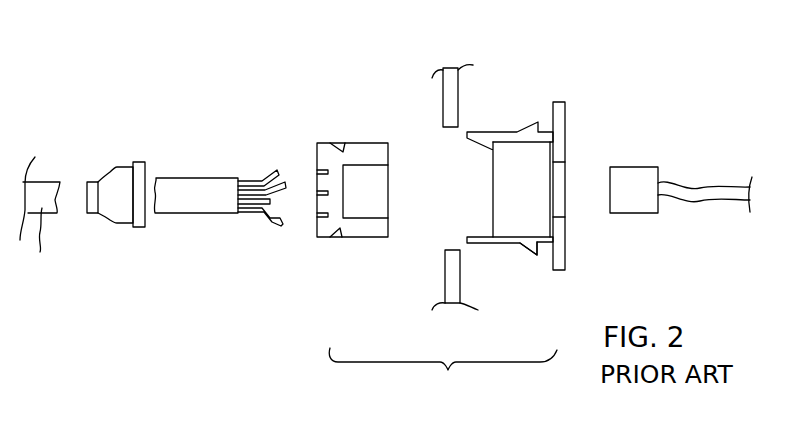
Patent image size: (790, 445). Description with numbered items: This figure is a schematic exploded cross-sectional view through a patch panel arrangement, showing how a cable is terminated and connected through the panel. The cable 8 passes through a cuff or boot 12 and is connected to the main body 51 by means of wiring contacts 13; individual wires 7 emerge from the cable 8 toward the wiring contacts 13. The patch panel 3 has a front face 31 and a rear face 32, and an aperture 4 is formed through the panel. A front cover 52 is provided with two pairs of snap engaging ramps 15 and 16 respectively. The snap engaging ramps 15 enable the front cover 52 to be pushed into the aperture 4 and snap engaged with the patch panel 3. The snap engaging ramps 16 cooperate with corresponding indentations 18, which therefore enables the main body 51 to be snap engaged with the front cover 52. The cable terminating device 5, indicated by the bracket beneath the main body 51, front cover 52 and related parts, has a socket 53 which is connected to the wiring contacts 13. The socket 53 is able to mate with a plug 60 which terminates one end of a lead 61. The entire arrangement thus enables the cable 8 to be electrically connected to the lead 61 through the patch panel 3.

The cable 8 is at (195, 205).
The cuff or boot 12 is at (115, 185).
The wires 7 is at (257, 177).
The wiring contacts 13 is at (317, 215).
The indentations 18 is at (338, 143).
The socket 53 is at (365, 191).
The main body 51 is at (362, 228).
The patch panel 3 is at (452, 78).
The rear face 32 is at (443, 116).
The front face 31 is at (460, 98).
The aperture 4 is at (460, 205).
The snap engaging ramps 16 is at (500, 227).
The snap engaging ramps 15 is at (532, 257).
The front cover 52 is at (567, 115).
The plug 60 is at (637, 180).
The lead 61 is at (698, 195).
The cable terminating device 5 is at (443, 380).